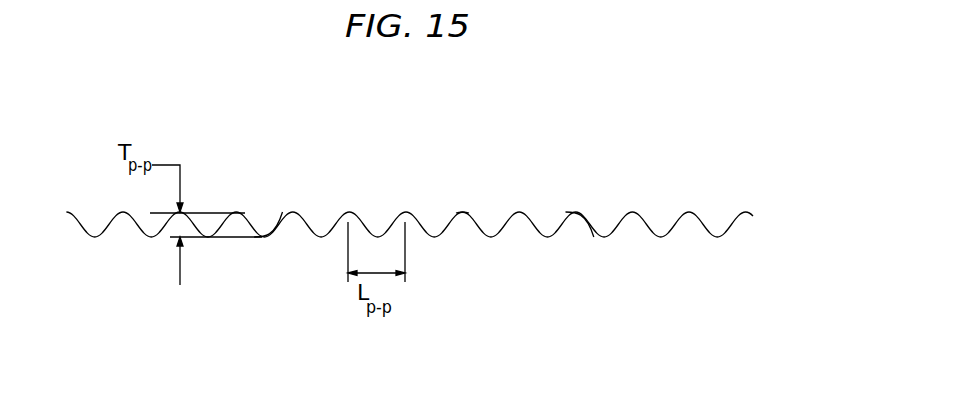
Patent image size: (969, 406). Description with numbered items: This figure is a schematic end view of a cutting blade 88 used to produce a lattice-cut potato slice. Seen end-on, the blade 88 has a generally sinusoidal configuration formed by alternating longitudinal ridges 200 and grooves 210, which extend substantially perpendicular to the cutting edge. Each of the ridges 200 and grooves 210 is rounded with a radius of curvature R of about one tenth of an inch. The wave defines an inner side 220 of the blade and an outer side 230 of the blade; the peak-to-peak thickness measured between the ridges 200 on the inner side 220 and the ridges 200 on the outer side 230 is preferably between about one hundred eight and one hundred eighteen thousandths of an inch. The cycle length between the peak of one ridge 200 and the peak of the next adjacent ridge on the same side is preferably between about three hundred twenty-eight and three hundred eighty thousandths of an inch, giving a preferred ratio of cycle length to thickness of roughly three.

The cutting blade 88 is at (698, 213).
The longitudinal ridges 200 is at (573, 212).
The grooves 210 is at (265, 236).
The inner side 220 is at (409, 156).
The outer side 230 is at (496, 332).
The radius of curvature R is at (464, 209).